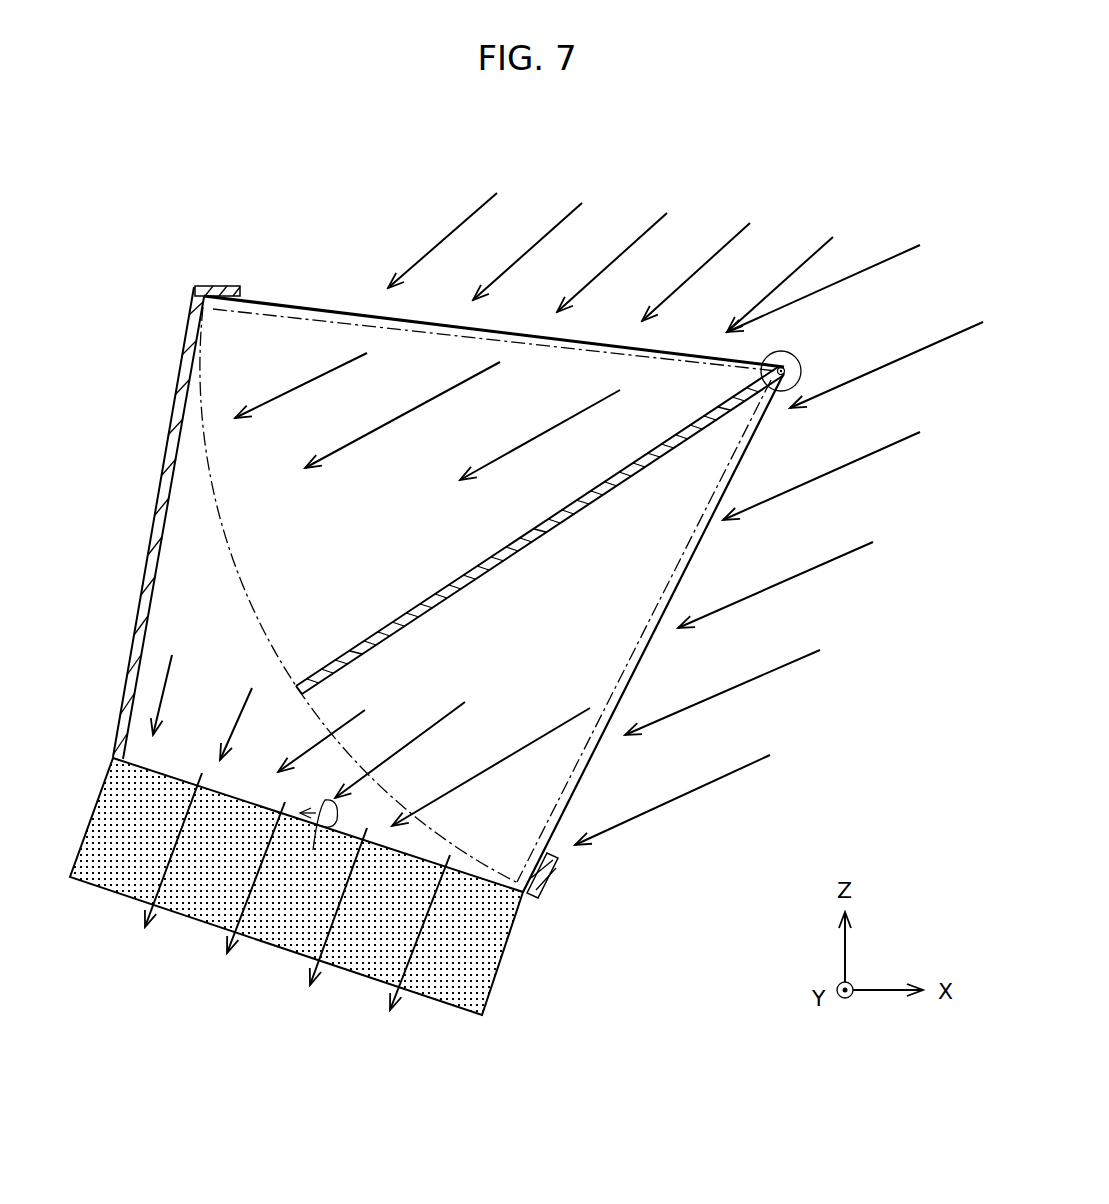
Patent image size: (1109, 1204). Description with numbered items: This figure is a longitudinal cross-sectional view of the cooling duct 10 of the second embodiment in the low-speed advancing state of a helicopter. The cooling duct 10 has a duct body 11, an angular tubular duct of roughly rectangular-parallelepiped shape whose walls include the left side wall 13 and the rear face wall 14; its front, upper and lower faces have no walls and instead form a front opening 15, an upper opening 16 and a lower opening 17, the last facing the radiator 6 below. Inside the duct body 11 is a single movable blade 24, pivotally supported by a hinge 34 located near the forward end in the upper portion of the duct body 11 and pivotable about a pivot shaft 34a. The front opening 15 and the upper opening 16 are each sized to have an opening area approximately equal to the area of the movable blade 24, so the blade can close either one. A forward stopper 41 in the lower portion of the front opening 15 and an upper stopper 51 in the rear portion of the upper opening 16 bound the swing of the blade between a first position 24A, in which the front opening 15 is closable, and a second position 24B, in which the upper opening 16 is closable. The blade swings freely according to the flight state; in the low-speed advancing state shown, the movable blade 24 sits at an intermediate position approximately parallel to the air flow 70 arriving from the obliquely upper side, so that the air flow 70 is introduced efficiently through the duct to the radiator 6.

The cooling duct 10 is at (262, 205).
The duct body 11 is at (186, 316).
The upper stopper 51 is at (213, 286).
The rear face wall 14 is at (170, 432).
The upper opening 16 is at (522, 366).
The second position 24B is at (290, 321).
The left side wall 13 is at (752, 440).
The first position 24A is at (572, 757).
The front opening 15 is at (607, 655).
The movable blade 24 is at (612, 492).
The hinge 34 is at (790, 362).
The pivot shaft 34a is at (790, 371).
The forward stopper 41 is at (556, 868).
The radiator 6 is at (352, 985).
The lower opening 17 is at (313, 850).
The air flow 70 is at (572, 207).